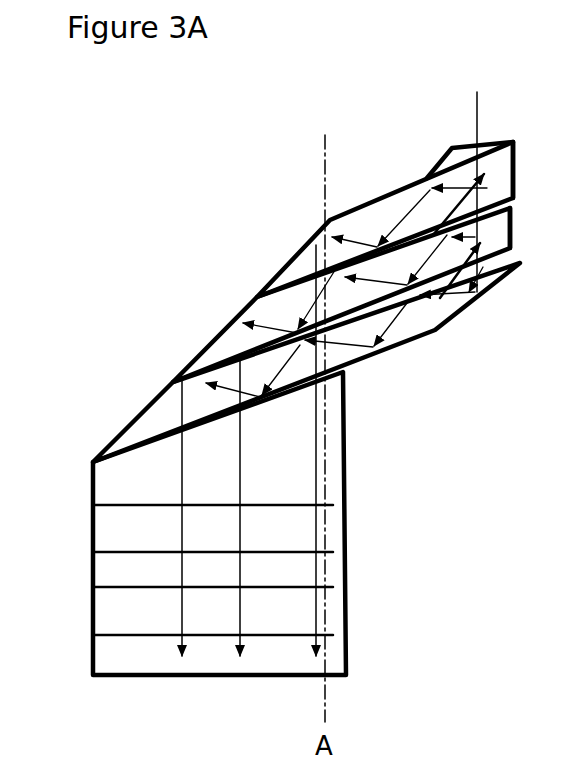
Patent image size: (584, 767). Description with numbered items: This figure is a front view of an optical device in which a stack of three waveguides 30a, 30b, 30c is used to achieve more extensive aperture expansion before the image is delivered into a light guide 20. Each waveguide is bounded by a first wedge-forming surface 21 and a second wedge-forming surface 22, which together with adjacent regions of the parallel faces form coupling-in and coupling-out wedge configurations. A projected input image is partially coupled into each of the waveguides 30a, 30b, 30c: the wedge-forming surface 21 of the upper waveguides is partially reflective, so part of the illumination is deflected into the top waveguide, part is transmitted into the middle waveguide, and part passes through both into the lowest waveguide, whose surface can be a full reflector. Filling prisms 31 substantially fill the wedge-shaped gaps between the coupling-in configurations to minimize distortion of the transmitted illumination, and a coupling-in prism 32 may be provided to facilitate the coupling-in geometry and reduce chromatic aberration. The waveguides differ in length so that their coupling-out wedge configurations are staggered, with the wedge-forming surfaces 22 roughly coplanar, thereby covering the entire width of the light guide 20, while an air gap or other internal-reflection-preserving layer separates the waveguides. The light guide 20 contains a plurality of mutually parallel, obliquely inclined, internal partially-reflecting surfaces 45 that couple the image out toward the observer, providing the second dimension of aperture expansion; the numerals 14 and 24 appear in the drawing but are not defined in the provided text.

The display 14 is at (576, 343).
The light guide 20 is at (208, 460).
The first wedge-forming surface 21 is at (478, 158).
The second wedge-forming surface 22 is at (303, 243).
The viewer side 24 is at (576, 481).
The waveguide 30a is at (405, 328).
The waveguide 30b is at (260, 285).
The waveguide 30c is at (378, 210).
The filling prism 31 is at (518, 172).
The coupling-in prism 32 is at (432, 176).
The partially-reflecting surfaces 45 is at (113, 554).